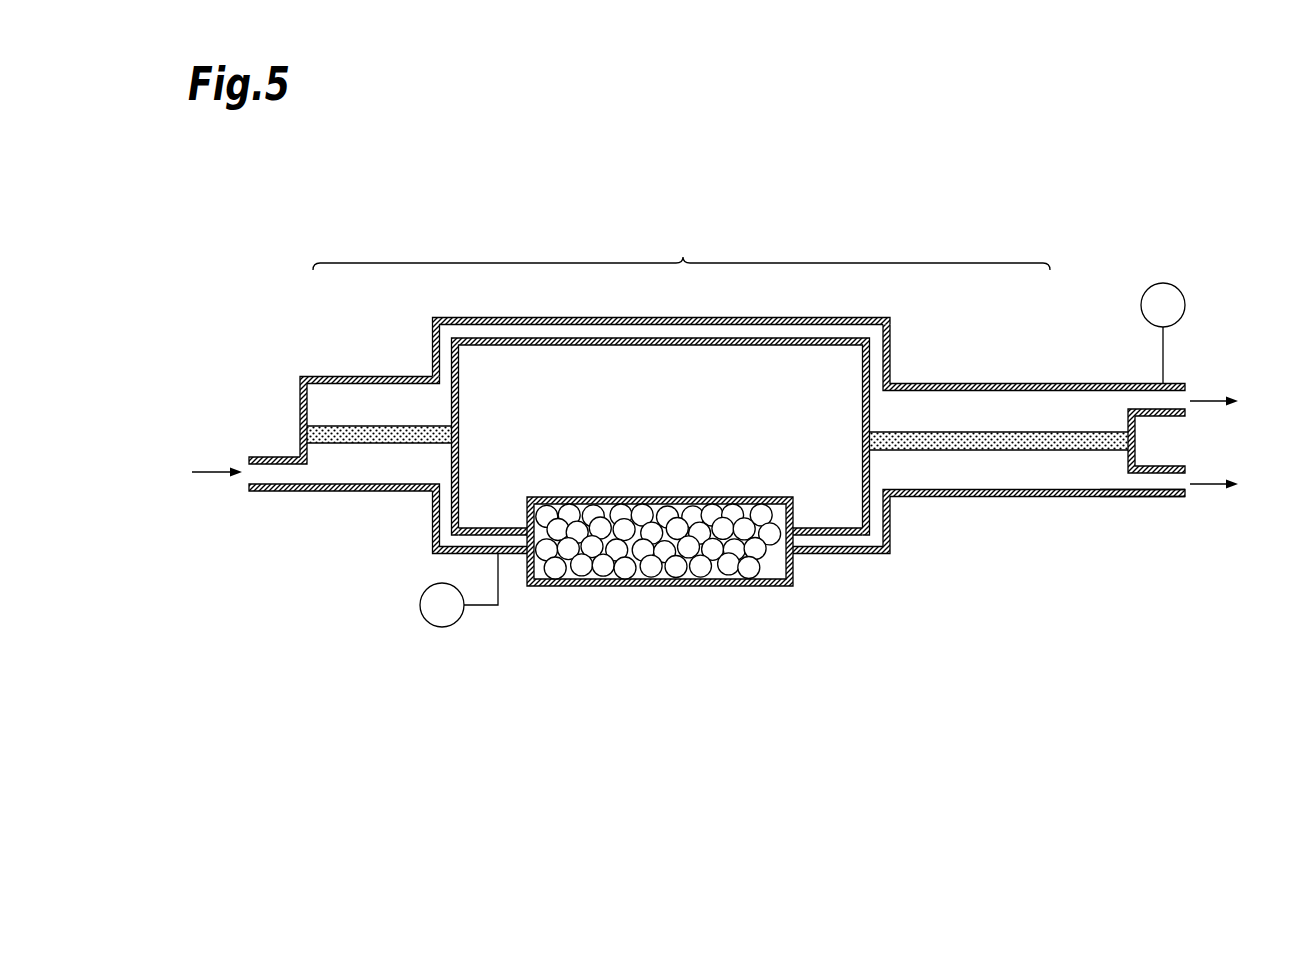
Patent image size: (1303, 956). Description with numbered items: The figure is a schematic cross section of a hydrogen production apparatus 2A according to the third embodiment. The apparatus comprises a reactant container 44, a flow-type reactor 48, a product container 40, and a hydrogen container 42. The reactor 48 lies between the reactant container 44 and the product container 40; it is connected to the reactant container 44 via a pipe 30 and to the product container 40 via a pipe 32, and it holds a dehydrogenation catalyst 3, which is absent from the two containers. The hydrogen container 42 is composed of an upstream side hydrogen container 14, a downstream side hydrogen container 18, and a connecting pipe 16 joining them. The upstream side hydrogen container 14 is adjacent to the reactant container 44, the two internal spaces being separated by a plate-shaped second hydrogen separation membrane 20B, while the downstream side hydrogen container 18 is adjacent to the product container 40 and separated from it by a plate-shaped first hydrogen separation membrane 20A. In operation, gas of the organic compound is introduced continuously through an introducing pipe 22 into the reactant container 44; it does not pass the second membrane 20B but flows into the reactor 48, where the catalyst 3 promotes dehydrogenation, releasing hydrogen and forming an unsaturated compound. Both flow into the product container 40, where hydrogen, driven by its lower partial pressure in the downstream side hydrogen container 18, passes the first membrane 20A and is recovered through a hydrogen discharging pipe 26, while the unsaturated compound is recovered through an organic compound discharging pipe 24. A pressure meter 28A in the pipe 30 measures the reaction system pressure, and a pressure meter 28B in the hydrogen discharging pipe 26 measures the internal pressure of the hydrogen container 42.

The hydrogen production apparatus 2A is at (1004, 228).
The dehydrogenation catalyst 3 is at (607, 567).
The upstream side hydrogen container 14 is at (340, 375).
The connecting pipe 16 is at (605, 317).
The downstream side hydrogen container 18 is at (1020, 383).
The first hydrogen separation membrane 20A is at (1068, 432).
The second hydrogen separation membrane 20B is at (385, 427).
The introducing pipe 22 is at (268, 492).
The organic compound discharging pipe 24 is at (1162, 499).
The hydrogen discharging pipe 26 is at (1165, 416).
The pressure meter 28A is at (440, 628).
The pressure meter 28B is at (1160, 283).
The pipe 30 is at (500, 528).
The pipe 32 is at (826, 528).
The product container 40 is at (1010, 499).
The hydrogen container 42 is at (681, 249).
The reactant container 44 is at (353, 492).
The flow-type reactor 48 is at (688, 586).